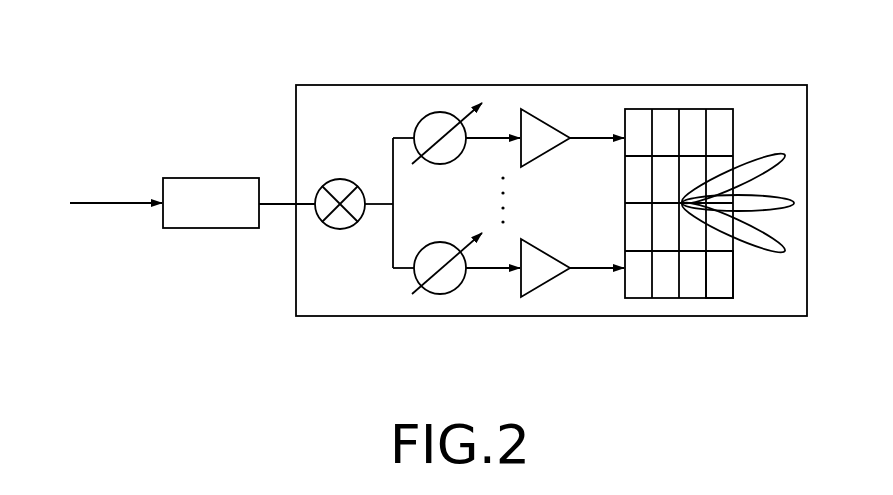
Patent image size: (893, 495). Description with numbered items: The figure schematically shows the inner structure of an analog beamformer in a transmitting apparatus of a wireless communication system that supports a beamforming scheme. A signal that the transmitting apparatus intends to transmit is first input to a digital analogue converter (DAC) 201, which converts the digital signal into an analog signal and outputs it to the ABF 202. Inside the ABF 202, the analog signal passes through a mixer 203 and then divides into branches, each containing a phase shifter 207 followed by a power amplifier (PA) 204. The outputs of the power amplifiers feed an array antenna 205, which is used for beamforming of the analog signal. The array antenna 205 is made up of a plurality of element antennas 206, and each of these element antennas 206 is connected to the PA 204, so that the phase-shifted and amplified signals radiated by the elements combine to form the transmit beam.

The digital analogue converter 201 is at (210, 178).
The ABF 202 is at (549, 85).
The mixer 203 is at (340, 179).
The power amplifier 204 is at (520, 109).
The array antenna 205 is at (679, 109).
The element antennas 206 is at (719, 290).
The phase shifter 207 is at (440, 112).